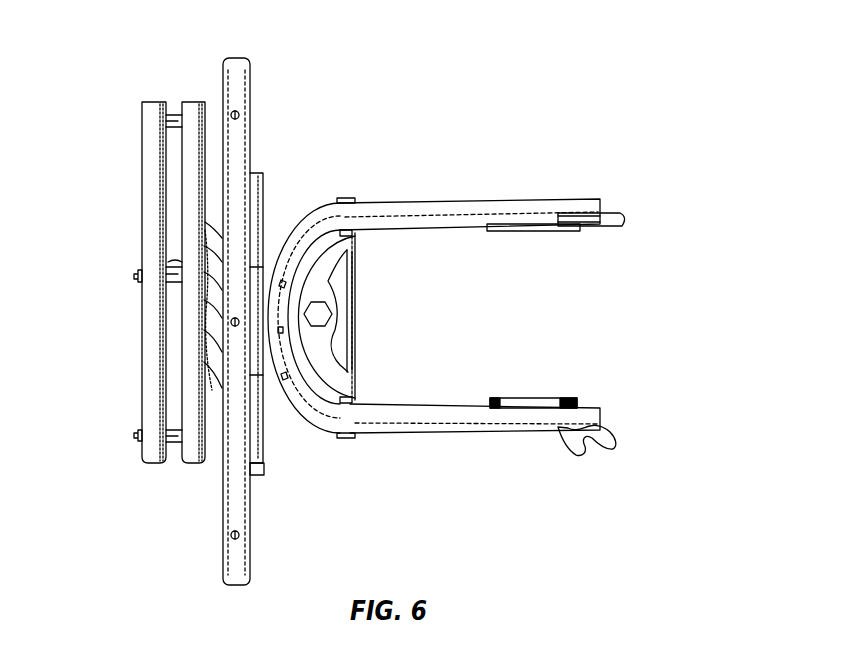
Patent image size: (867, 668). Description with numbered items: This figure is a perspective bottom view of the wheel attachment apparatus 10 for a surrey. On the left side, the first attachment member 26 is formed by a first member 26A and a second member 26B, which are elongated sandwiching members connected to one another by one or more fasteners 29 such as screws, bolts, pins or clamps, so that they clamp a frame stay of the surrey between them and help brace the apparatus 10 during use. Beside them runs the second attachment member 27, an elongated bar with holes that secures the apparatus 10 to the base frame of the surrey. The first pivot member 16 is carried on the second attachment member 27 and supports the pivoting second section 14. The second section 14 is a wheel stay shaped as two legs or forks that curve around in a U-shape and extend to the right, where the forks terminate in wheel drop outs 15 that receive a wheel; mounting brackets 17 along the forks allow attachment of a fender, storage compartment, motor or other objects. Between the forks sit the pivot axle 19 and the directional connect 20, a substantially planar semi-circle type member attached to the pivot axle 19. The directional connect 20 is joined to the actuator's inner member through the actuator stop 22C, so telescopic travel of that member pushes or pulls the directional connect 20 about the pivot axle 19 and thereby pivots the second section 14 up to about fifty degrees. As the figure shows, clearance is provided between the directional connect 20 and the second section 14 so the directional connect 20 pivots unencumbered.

The apparatus 10 is at (592, 78).
The second section 14 is at (440, 200).
The wheel drop outs 15 is at (608, 431).
The first pivot member 16 is at (264, 431).
The mounting brackets 17 is at (530, 398).
The pivot axle 19 is at (357, 236).
The directional connect 20 is at (326, 368).
The actuator stop 22C is at (326, 313).
The first attachment member 26 is at (139, 279).
The first member 26A is at (193, 100).
The second member 26B is at (153, 101).
The second attachment member 27 is at (251, 86).
The fasteners 29 is at (137, 435).